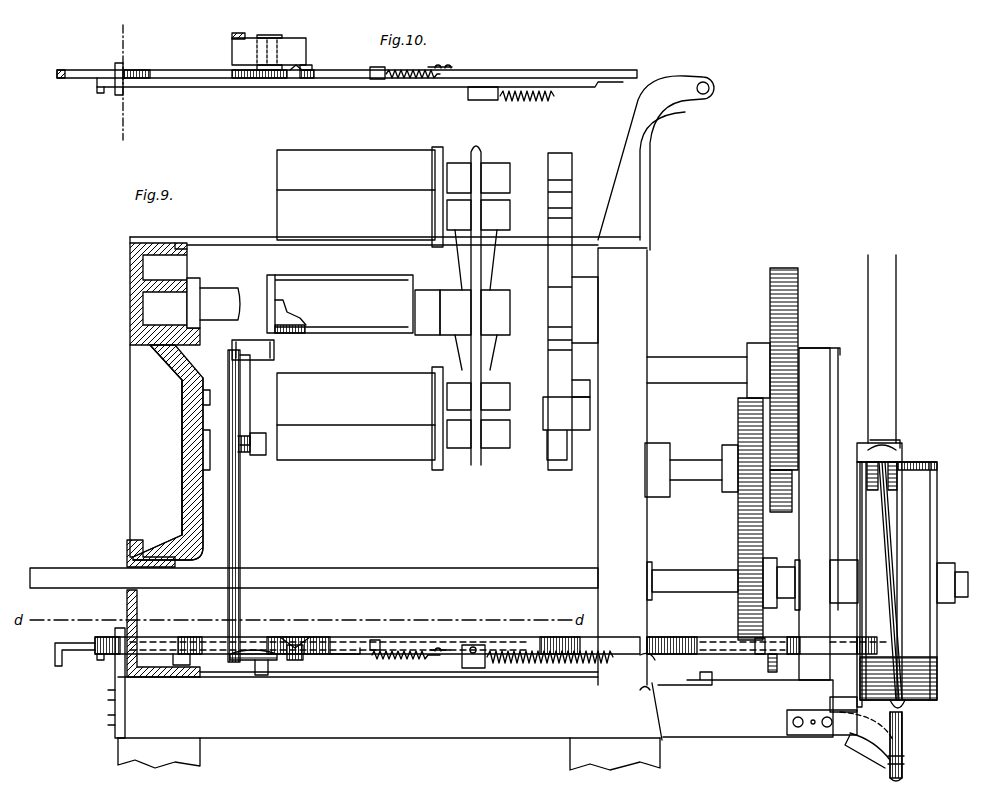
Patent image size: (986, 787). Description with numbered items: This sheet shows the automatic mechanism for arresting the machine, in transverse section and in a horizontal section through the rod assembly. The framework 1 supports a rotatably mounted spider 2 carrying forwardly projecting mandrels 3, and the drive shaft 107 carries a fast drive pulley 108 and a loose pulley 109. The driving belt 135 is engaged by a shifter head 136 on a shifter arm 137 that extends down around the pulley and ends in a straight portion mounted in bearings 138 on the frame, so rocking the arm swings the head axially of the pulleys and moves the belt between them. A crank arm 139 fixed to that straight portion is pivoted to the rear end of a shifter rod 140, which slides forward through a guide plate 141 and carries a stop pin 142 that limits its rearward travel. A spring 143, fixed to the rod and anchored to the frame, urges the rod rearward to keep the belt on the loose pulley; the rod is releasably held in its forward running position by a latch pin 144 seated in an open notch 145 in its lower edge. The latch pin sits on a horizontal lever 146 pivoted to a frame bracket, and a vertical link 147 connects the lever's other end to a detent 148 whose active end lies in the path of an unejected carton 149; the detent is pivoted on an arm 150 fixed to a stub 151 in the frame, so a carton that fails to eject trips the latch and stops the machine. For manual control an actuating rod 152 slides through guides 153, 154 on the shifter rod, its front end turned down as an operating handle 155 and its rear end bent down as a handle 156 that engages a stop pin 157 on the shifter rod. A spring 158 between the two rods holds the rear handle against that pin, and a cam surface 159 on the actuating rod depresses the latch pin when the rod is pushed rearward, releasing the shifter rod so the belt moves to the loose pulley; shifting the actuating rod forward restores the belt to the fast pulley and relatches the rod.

In FIG. 9, the framework 1 is at (640, 528).
In FIG. 9, the spider 2 is at (488, 170).
In FIG. 9, the mandrels 3 is at (375, 158).
In FIG. 9, the drive shaft 107 is at (475, 577).
In FIG. 9, the fast drive pulley 108 is at (864, 533).
In FIG. 9, the loose pulley 109 is at (930, 548).
In FIG. 9, the driving belt 135 is at (888, 418).
In FIG. 9, the shifter head 136 is at (897, 450).
In FIG. 9, the shifter arm 137 is at (896, 612).
In FIG. 9, the bearings 138 is at (855, 742).
In FIG. 9, the crank arm 139 is at (893, 668).
In FIG. 9, the shifter rod 140 is at (712, 645).
In FIG. 10, the guide plate 141 is at (124, 63).
In FIG. 9, the guide plate 141 is at (118, 630).
In FIG. 10, the stop pin 142 is at (99, 90).
In FIG. 9, the stop pin 142 is at (98, 658).
In FIG. 10, the spring 143 is at (515, 100).
In FIG. 9, the spring 143 is at (520, 670).
In FIG. 10, the latch pin 144 is at (312, 68).
In FIG. 9, the latch pin 144 is at (304, 657).
In FIG. 9, the open notch 145 is at (332, 636).
In FIG. 10, the horizontal lever 146 is at (290, 44).
In FIG. 9, the horizontal lever 146 is at (280, 664).
In FIG. 10, the vertical link 147 is at (244, 36).
In FIG. 9, the vertical link 147 is at (240, 514).
In FIG. 9, the detent 148 is at (266, 342).
In FIG. 9, the unejected carton 149 is at (282, 330).
In FIG. 9, the arm 150 is at (250, 412).
In FIG. 9, the stub 151 is at (262, 455).
In FIG. 10, the actuating rod 152 is at (90, 64).
In FIG. 9, the actuating rod 152 is at (90, 645).
In FIG. 10, the guide 153 is at (384, 66).
In FIG. 9, the guide 153 is at (380, 640).
In FIG. 9, the guide 154 is at (768, 640).
In FIG. 9, the operating handle 155 is at (55, 660).
In FIG. 9, the handle 156 is at (770, 676).
In FIG. 9, the stop pin 157 is at (766, 660).
In FIG. 10, the spring 158 is at (436, 66).
In FIG. 9, the spring 158 is at (400, 660).
In FIG. 10, the cam surface 159 is at (300, 67).
In FIG. 9, the cam surface 159 is at (287, 640).